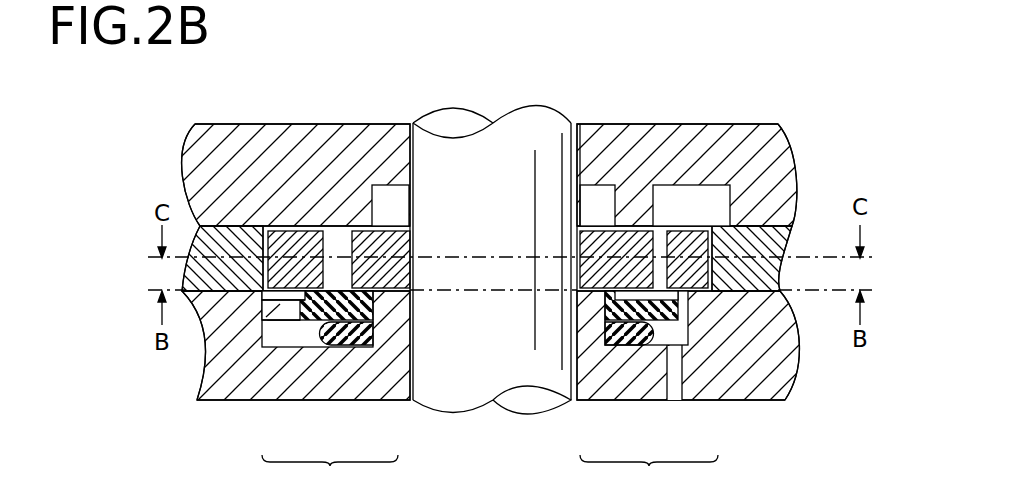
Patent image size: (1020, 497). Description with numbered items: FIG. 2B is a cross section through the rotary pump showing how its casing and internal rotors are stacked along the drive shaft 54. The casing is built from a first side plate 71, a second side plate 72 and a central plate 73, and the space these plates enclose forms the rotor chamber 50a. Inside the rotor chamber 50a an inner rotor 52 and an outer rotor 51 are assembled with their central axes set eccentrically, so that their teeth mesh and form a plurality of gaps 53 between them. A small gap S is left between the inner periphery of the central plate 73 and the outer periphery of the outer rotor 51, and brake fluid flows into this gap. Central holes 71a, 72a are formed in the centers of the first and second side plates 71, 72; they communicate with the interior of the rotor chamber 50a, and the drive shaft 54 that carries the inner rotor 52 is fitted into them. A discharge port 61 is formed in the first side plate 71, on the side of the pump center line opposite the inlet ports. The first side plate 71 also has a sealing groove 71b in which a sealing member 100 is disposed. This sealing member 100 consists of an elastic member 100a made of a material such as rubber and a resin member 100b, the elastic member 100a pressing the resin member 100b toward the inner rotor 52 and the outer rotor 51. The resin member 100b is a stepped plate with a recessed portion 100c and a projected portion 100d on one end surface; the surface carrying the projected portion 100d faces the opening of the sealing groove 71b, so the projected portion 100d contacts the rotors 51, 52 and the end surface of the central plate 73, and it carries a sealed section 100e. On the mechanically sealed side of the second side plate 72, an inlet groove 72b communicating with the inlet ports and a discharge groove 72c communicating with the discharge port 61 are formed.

The central plate 73 is at (230, 236).
The small gap S is at (263, 236).
The rotor chamber 50a is at (285, 240).
The inlet groove 72b is at (390, 200).
The drive shaft 54 is at (527, 148).
The central hole 72a is at (579, 152).
The inner rotor 52 is at (628, 236).
The discharge groove 72c is at (683, 196).
The outer rotor 51 is at (698, 236).
The second side plate 72 is at (743, 137).
The gaps 53 is at (660, 270).
The sealed section 100e is at (334, 300).
The projected portion 100d is at (265, 310).
The recessed portion 100c is at (262, 335).
The sealing groove 71b is at (275, 340).
The resin member 100b is at (310, 332).
The elastic member 100a is at (350, 332).
The sealing member 100 is at (490, 393).
The first side plate 71 is at (397, 393).
The central hole 71a is at (544, 337).
The discharge port 61 is at (680, 367).